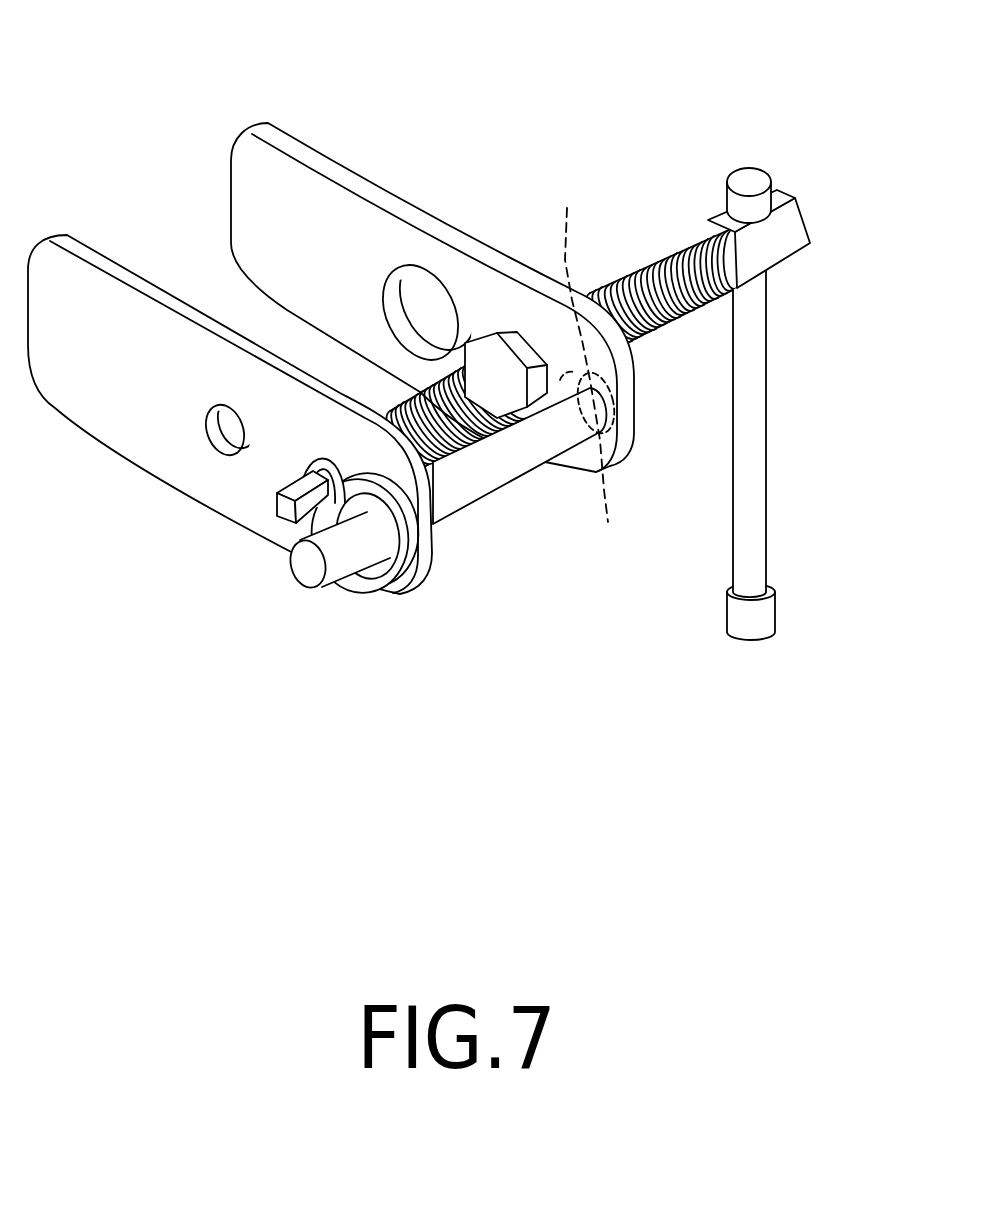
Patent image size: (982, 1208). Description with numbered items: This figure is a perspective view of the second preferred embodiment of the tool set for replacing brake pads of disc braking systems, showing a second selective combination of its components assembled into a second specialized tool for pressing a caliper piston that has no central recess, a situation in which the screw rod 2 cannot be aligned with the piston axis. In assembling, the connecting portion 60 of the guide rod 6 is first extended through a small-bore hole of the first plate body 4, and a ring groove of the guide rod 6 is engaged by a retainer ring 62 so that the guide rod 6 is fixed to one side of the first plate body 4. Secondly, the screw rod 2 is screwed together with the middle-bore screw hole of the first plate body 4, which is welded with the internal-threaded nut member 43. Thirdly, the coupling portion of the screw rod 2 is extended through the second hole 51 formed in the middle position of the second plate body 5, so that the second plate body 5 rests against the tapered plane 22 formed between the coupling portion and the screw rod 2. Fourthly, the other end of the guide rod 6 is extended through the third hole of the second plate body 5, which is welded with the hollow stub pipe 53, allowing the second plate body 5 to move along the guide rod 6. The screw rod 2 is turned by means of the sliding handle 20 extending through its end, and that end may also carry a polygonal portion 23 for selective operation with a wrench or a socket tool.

The screw rod 2 is at (653, 257).
The first plate body 4 is at (272, 150).
The second plate body 5 is at (72, 278).
The guide rod 6 is at (495, 463).
The sliding handle 20 is at (752, 440).
The tapered plane 22 is at (320, 458).
The polygonal portion 23 is at (778, 230).
The internal-threaded nut member 43 is at (500, 332).
The second hole 51 is at (417, 512).
The hollow stub pipe 53 is at (389, 540).
The connecting portion 60 is at (576, 345).
The retainer ring 62 is at (601, 469).